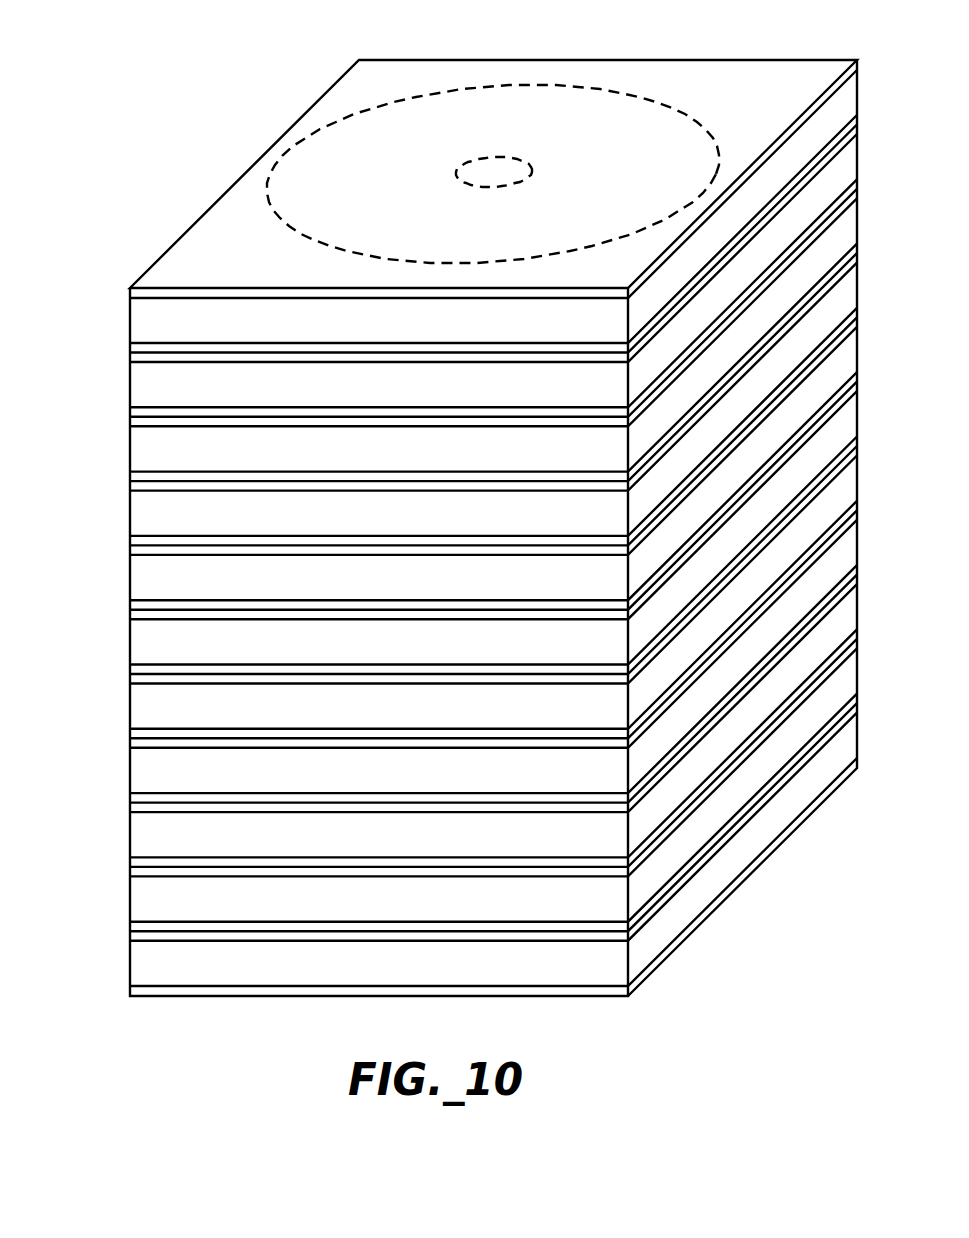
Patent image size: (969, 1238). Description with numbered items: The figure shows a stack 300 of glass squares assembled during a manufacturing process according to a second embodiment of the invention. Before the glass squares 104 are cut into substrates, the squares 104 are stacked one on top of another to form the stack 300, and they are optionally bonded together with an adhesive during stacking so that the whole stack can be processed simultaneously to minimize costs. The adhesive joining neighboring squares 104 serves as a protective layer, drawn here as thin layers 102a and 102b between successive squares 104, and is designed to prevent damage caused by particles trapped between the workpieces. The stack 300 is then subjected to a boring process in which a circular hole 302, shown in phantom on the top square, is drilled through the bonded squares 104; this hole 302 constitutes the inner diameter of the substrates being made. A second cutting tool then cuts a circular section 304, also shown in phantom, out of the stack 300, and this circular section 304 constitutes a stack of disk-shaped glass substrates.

The stack 300 is at (278, 51).
The circular hole 302 is at (496, 166).
The circular section 304 is at (649, 95).
The protective layer 102a is at (447, 516).
The protective layer 102b is at (447, 558).
The glass square 104 is at (493, 545).